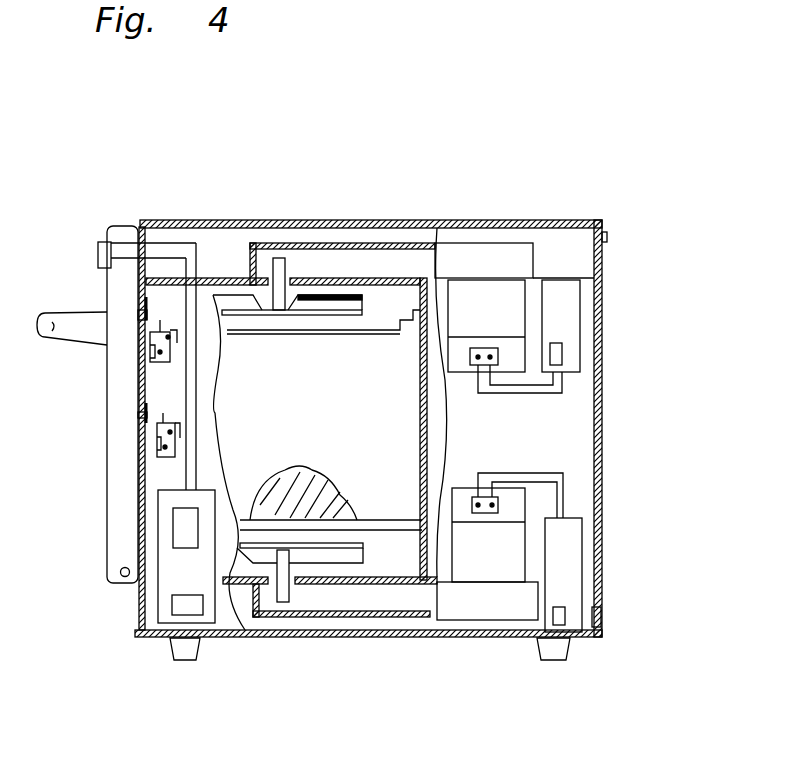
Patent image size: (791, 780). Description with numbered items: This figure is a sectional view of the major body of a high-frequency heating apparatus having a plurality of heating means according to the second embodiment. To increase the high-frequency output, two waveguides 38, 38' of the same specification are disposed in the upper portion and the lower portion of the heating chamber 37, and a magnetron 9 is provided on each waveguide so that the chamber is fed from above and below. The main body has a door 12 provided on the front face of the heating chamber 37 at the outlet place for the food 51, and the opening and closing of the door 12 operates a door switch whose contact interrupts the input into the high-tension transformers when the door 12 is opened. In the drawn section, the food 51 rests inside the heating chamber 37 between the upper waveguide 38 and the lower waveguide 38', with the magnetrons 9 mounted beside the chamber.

The magnetron 9 is at (492, 302).
The door 12 is at (118, 452).
The heating chamber 37 is at (393, 498).
The waveguide 38 is at (290, 224).
The waveguide 38' is at (330, 637).
The food 51 is at (277, 502).